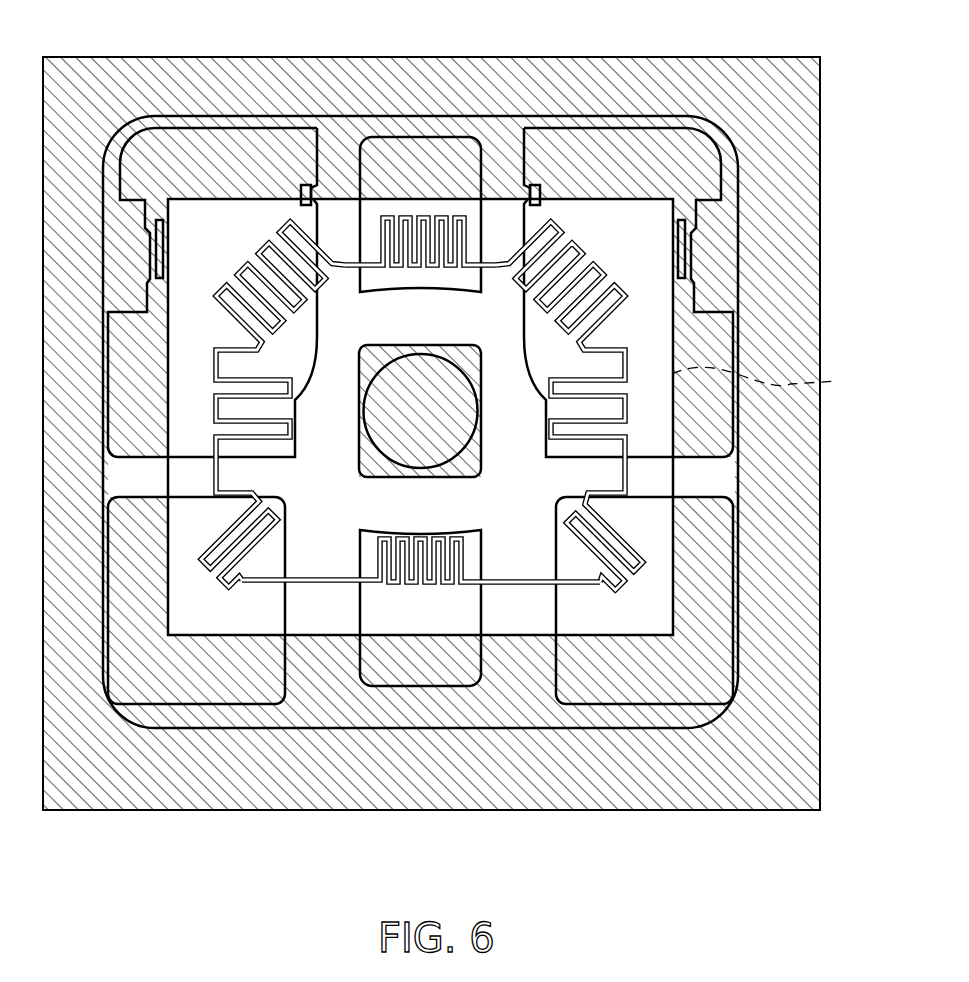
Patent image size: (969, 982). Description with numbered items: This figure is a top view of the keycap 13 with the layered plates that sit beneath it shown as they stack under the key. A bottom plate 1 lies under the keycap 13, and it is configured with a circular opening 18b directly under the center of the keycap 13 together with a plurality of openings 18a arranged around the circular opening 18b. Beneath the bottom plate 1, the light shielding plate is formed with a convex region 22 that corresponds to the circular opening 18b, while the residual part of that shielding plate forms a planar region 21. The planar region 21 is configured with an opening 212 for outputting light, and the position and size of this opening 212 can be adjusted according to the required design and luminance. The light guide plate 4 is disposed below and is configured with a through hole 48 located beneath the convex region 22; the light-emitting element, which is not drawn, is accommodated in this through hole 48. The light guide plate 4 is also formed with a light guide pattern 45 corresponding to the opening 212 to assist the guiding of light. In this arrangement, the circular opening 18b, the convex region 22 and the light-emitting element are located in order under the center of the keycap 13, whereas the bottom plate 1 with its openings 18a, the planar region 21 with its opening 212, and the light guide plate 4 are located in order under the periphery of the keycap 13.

The bottom plate 1 is at (343, 290).
The light guide plate 4 is at (637, 218).
The keycap 13 is at (622, 116).
The planar region 21 is at (238, 140).
The opening 212 is at (782, 382).
The openings 18a is at (285, 604).
The circular opening 18b is at (422, 345).
The convex region 22 is at (438, 428).
The light guide pattern 45 is at (588, 580).
The through hole 48 is at (453, 480).